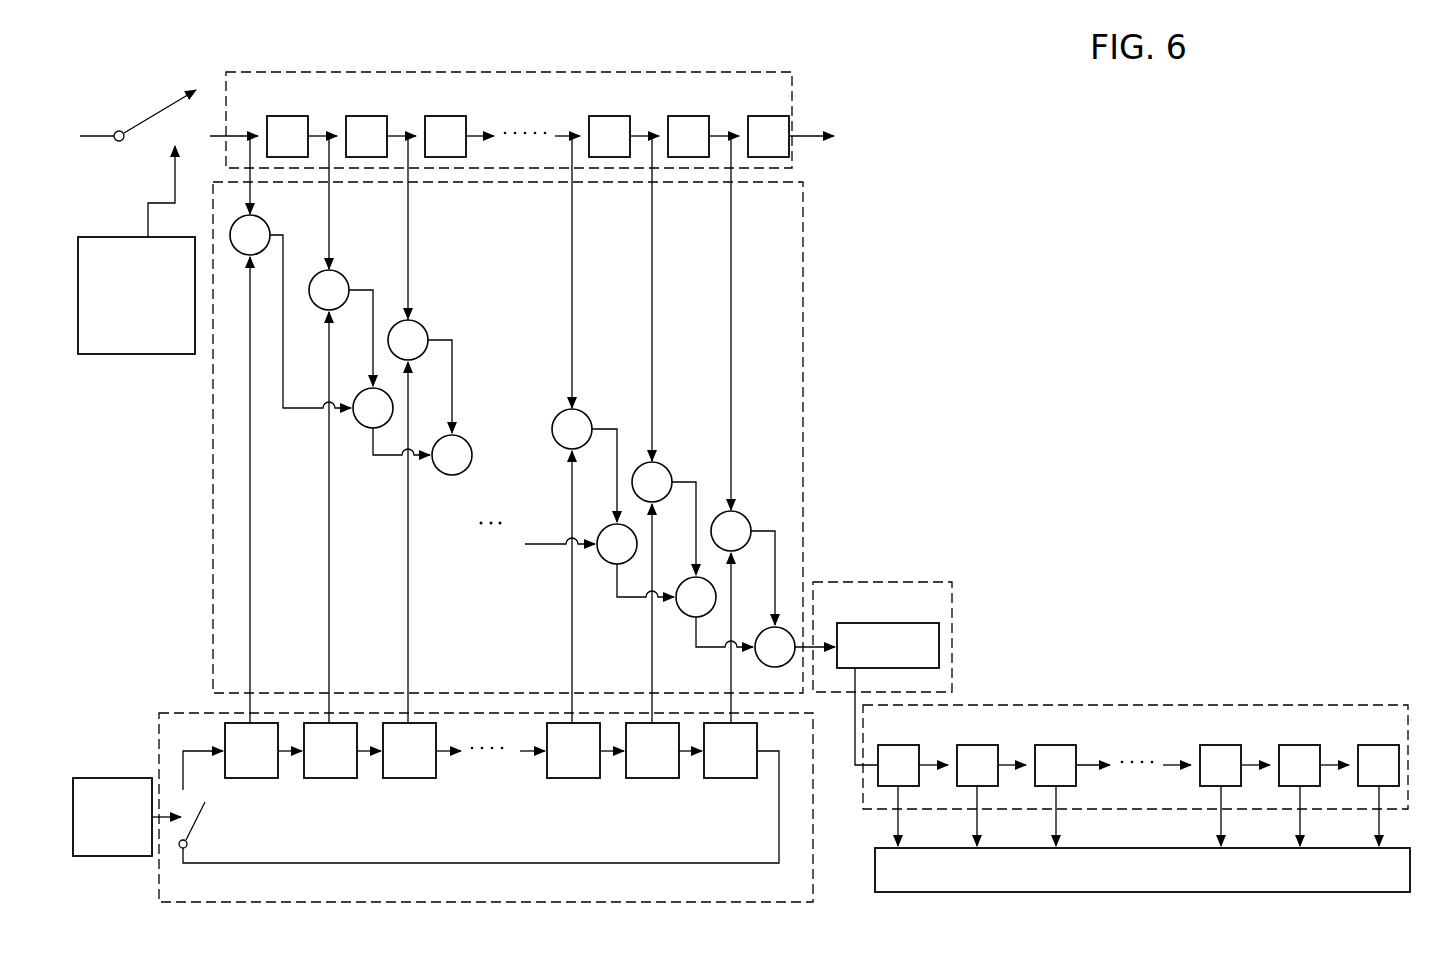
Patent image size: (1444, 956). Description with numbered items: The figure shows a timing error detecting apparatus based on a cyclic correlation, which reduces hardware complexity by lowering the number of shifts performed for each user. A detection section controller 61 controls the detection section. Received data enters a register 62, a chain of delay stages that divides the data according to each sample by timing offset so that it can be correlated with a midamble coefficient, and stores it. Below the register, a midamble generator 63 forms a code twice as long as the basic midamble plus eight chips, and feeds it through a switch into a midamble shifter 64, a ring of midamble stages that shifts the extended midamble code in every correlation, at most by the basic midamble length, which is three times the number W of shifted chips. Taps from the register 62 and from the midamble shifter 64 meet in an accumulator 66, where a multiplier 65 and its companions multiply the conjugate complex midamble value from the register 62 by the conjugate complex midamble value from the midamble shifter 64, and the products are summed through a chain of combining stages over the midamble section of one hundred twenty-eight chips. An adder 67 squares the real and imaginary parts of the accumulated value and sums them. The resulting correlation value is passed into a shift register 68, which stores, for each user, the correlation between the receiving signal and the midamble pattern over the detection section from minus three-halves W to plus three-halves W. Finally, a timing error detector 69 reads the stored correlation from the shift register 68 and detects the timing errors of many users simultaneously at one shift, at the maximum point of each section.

The detection section controller 61 is at (165, 237).
The register 62 is at (750, 72).
The midamble generator 63 is at (105, 778).
The midamble shifter 64 is at (813, 878).
The multiplier 65 is at (666, 469).
The accumulator 66 is at (785, 182).
The adder 67 is at (930, 582).
The shift register 68 is at (1360, 705).
The timing error detector 69 is at (1395, 848).